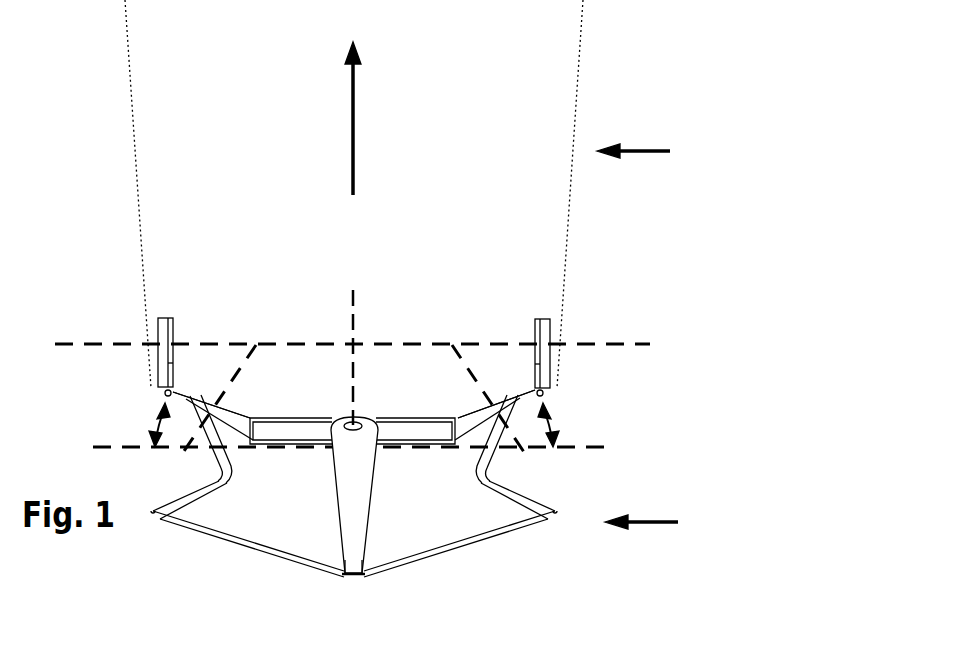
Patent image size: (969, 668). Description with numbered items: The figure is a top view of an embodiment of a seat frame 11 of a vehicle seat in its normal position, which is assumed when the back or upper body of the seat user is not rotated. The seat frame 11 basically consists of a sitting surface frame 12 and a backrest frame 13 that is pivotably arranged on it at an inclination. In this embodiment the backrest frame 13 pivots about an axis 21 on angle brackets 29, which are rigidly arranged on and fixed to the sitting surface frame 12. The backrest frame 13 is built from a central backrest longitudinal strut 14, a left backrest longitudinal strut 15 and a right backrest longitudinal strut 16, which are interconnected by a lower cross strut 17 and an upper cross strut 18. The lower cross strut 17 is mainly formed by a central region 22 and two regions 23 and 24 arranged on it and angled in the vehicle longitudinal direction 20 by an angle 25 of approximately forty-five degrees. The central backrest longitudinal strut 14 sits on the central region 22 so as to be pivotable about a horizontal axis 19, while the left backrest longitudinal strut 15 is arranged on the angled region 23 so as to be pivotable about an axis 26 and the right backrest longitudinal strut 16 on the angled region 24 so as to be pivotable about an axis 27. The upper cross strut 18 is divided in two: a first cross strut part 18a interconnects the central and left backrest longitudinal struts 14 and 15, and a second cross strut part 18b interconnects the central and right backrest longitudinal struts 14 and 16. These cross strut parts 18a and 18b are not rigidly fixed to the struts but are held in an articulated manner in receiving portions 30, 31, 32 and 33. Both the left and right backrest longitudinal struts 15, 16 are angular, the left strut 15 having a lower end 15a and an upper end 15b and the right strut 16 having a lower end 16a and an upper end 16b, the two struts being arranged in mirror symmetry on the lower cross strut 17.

The seat frame 11 is at (648, 152).
The sitting surface frame 12 is at (530, 63).
The backrest frame 13 is at (657, 524).
The central backrest longitudinal strut 14 is at (353, 560).
The left backrest longitudinal strut 15 is at (244, 460).
The lower end 15a is at (240, 458).
The upper end 15b is at (205, 488).
The right backrest longitudinal strut 16 is at (466, 462).
The lower end 16a is at (466, 450).
The upper end 16b is at (490, 492).
The lower cross strut 17 is at (354, 404).
The upper cross strut 18 is at (354, 554).
The first cross strut part 18a is at (250, 546).
The second cross strut part 18b is at (443, 552).
The horizontal axis 19 is at (355, 300).
The vehicle longitudinal direction 20 is at (368, 118).
The axis 21 is at (90, 340).
The central region 22 is at (395, 428).
The angled region 23 is at (166, 392).
The angled region 24 is at (540, 393).
The angle 25 is at (152, 421).
The axis 26 is at (237, 377).
The axis 27 is at (473, 376).
The angle brackets 29 is at (165, 318).
The receiving portion 30 is at (168, 521).
The receiving portion 31 is at (346, 575).
The receiving portion 32 is at (363, 576).
The receiving portion 33 is at (543, 518).